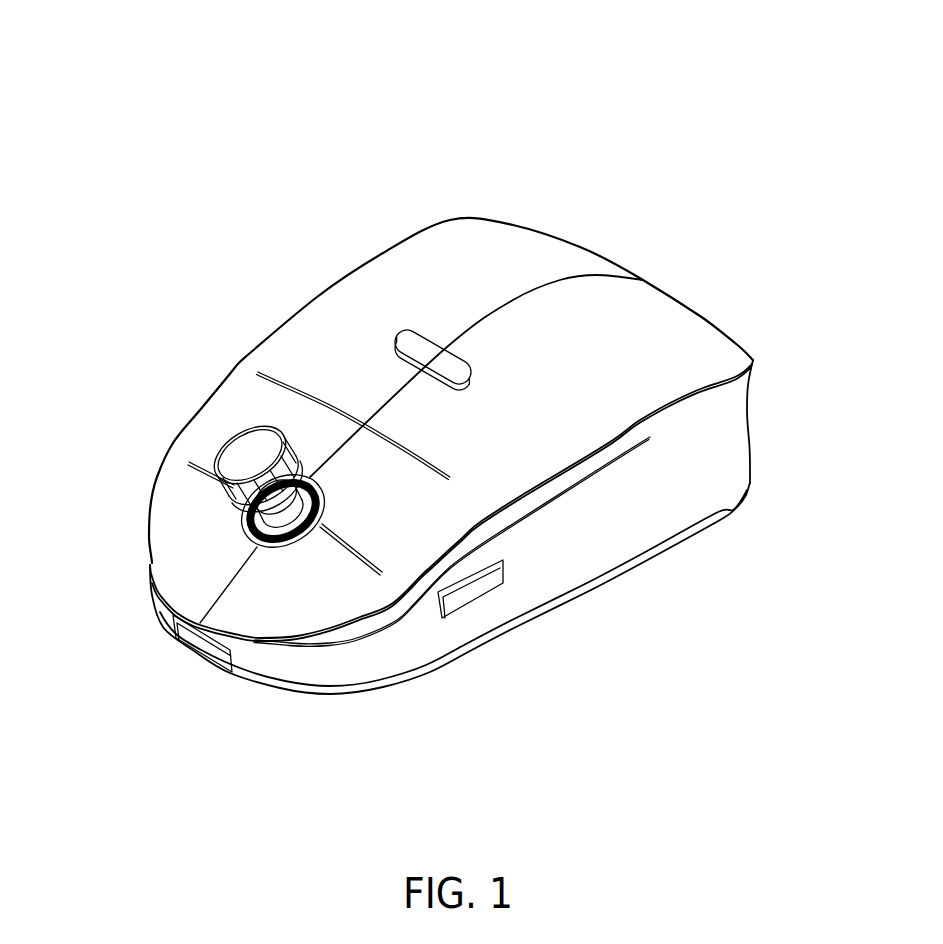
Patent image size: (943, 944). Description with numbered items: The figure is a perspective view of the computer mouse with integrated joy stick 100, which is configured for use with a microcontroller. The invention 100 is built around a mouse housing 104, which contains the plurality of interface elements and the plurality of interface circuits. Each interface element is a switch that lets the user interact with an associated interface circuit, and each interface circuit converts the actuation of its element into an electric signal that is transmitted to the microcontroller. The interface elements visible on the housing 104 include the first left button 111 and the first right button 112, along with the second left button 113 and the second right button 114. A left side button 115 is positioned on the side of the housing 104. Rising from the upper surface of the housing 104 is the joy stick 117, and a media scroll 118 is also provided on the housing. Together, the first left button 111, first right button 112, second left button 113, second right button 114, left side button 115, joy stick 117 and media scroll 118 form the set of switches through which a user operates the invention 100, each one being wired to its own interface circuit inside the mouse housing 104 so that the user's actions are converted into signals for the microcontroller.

The computer mouse with integrated joy stick 100 is at (158, 127).
The mouse housing 104 is at (717, 475).
The first left button 111 is at (287, 623).
The first right button 112 is at (180, 547).
The second left button 113 is at (397, 500).
The second right button 114 is at (207, 426).
The left side button 115 is at (473, 603).
The joy stick 117 is at (262, 432).
The media scroll 118 is at (428, 336).